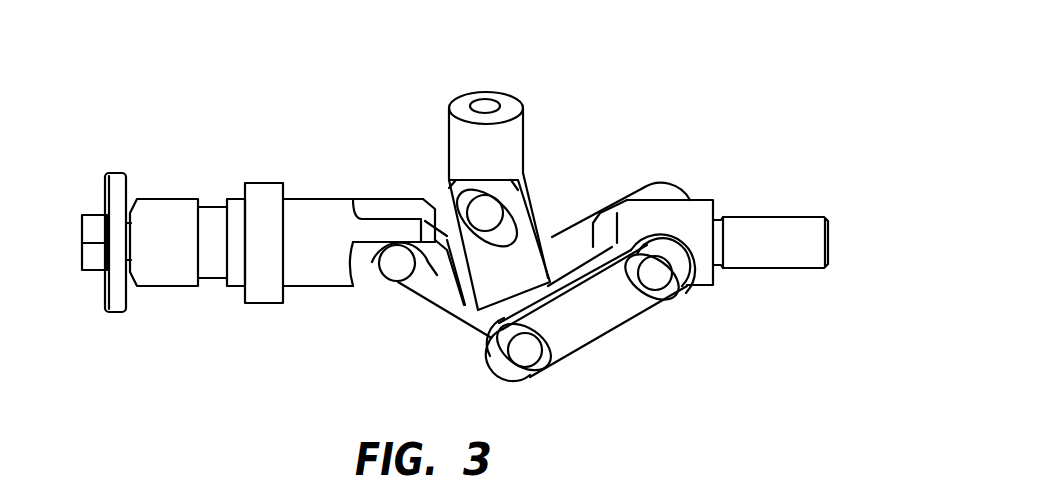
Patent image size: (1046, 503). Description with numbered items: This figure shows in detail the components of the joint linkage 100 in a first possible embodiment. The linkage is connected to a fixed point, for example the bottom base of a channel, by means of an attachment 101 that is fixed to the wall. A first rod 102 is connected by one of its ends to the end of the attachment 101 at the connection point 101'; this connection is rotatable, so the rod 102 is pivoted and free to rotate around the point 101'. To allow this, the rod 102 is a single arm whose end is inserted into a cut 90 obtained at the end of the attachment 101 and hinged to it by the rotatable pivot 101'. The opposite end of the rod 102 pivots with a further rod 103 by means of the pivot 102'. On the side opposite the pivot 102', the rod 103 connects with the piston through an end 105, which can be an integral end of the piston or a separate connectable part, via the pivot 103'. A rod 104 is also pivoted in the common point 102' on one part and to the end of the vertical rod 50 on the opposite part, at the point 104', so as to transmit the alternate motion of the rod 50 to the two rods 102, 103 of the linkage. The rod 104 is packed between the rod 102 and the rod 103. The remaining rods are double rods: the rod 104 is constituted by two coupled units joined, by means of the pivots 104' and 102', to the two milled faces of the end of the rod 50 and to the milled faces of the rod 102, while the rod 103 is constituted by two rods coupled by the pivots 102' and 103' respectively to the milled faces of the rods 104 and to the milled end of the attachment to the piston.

The joint linkage 100 is at (664, 86).
The rod 50 is at (502, 105).
The cut 90 is at (363, 212).
The attachment 101 is at (236, 204).
The connection point (rotatable pivot) 101' is at (395, 296).
The first rod 102 is at (444, 311).
The pivot 102' is at (508, 360).
The rod 103 is at (590, 313).
The pivot 103' is at (654, 297).
The rod 104 is at (524, 224).
The pivot point 104' is at (450, 189).
The end 105 is at (783, 260).